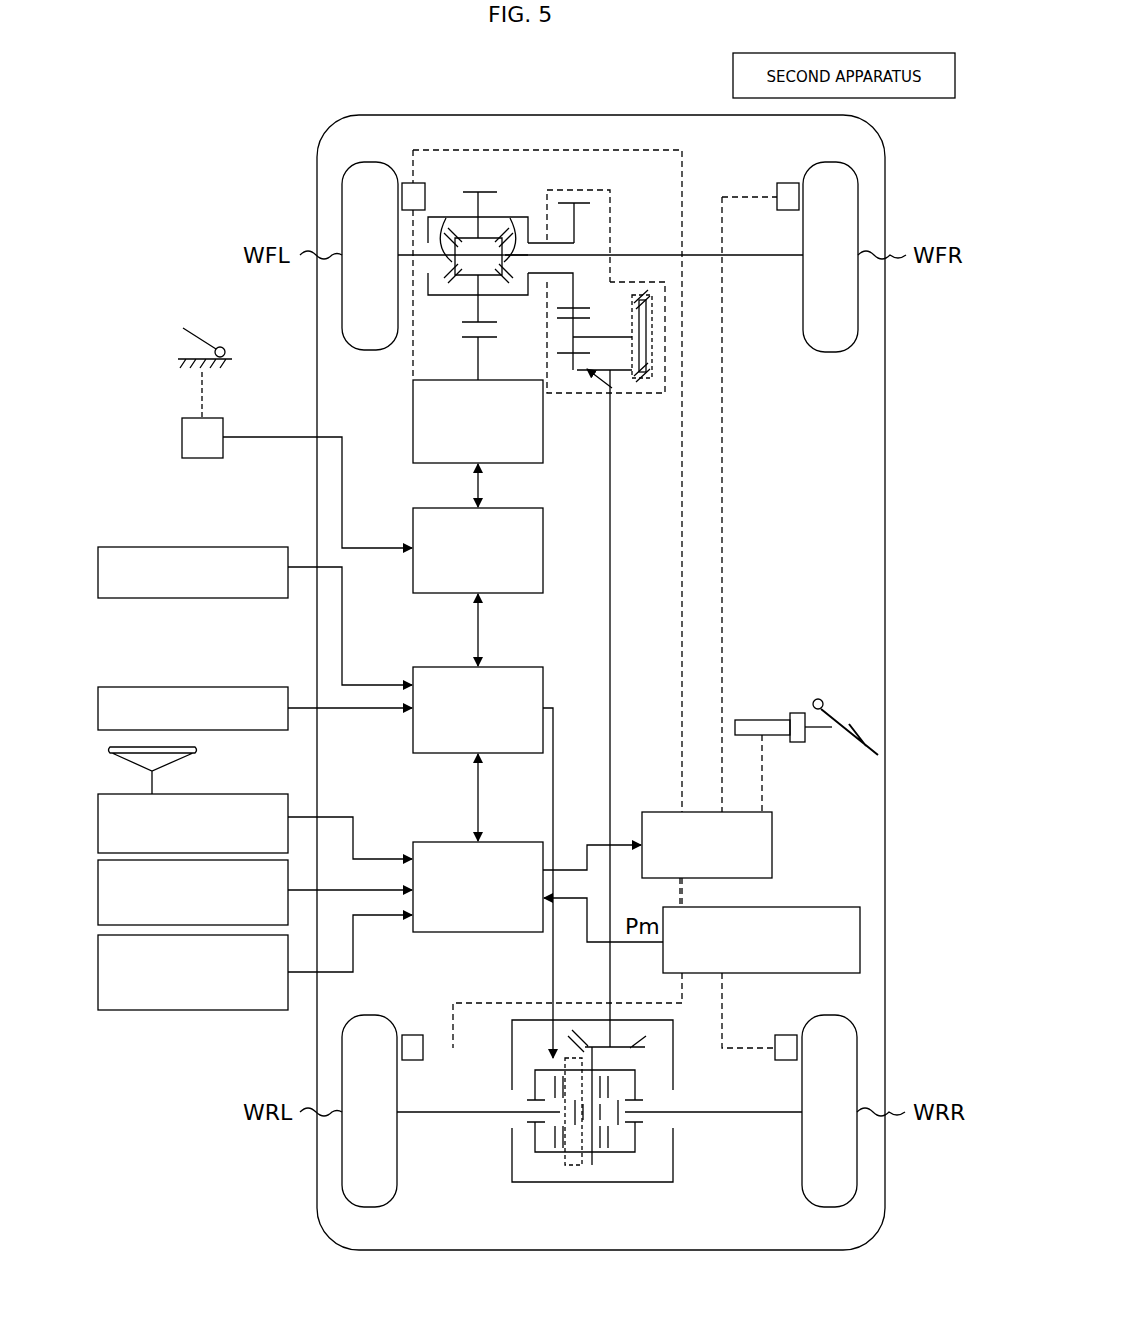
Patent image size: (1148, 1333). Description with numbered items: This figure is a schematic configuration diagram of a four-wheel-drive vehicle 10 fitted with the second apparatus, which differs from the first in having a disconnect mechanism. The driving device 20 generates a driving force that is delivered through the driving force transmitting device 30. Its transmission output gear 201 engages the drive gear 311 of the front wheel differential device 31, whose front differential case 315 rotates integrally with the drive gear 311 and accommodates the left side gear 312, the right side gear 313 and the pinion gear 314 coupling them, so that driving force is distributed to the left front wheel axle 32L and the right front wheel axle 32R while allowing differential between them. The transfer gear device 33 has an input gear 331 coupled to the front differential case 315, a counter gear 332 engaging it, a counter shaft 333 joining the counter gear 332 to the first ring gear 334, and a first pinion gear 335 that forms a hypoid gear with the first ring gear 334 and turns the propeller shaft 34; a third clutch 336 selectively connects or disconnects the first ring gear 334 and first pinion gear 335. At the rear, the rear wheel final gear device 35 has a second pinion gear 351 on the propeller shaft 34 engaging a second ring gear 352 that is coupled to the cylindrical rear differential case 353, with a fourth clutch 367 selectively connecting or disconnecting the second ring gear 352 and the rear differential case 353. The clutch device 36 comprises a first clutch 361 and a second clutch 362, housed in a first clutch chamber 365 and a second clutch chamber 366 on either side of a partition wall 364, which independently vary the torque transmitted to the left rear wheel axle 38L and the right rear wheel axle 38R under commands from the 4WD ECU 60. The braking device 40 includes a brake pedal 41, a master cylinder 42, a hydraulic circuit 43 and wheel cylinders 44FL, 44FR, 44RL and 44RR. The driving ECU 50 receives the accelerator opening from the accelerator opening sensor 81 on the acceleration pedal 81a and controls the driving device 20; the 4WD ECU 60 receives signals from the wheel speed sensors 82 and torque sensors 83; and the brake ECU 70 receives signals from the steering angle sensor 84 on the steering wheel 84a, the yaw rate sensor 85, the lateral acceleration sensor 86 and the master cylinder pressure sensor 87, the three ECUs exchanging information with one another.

The four-wheel-drive vehicle 10 is at (662, 97).
The driving device 20 is at (412, 425).
The driving force transmitting device 30 is at (747, 408).
The front wheel differential device 31 is at (438, 133).
The drive gear 311 is at (476, 192).
The left side gear 312 is at (441, 216).
The right side gear 313 is at (502, 238).
The pinion gear 314 is at (497, 222).
The front differential case 315 is at (516, 300).
The left front wheel axle 32L is at (408, 258).
The right front wheel axle 32R is at (773, 258).
The transfer gear device 33 is at (614, 238).
The input gear 331 is at (582, 198).
The counter gear 332 is at (566, 376).
The counter shaft 333 is at (600, 336).
The first ring gear 334 is at (650, 318).
The first pinion gear 335 is at (632, 388).
The third clutch 336 is at (652, 368).
The propeller shaft 34 is at (611, 595).
The rear wheel final gear device 35 is at (625, 1038).
The second pinion gear 351 is at (598, 1047).
The second ring gear 352 is at (560, 1047).
The rear differential case 353 is at (545, 1070).
The clutch device 36 is at (543, 1152).
The first clutch 361 is at (548, 1140).
The second clutch 362 is at (622, 1142).
The partition wall 364 is at (592, 1150).
The first clutch chamber 365 is at (536, 1081).
The second clutch chamber 366 is at (640, 1086).
The fourth clutch 367 is at (584, 1165).
The left rear wheel axle 38L is at (420, 1115).
The right rear wheel axle 38R is at (752, 1115).
The braking device 40 is at (840, 683).
The brake pedal 41 is at (860, 736).
The master cylinder 42 is at (762, 720).
The hydraulic circuit 43 is at (774, 818).
The left front wheel cylinder 44FL is at (410, 183).
The right front wheel cylinder 44FR is at (783, 183).
The left rear wheel cylinder 44RL is at (410, 1035).
The right rear wheel cylinder 44RR is at (786, 1062).
The driving ECU 50 is at (432, 508).
The 4WD ECU 60 is at (432, 667).
The brake ECU 70 is at (432, 842).
The accelerator opening sensor 81 is at (182, 440).
The acceleration pedal 81a is at (194, 333).
The wheel speed sensors 82 is at (186, 547).
The torque sensors 83 is at (186, 687).
The steering angle sensor 84 is at (98, 813).
The steering wheel 84a is at (109, 757).
The yaw rate sensor 85 is at (98, 878).
The lateral acceleration sensor 86 is at (98, 965).
The master cylinder pressure sensor 87 is at (802, 907).
The transmission output gear 201 is at (462, 344).